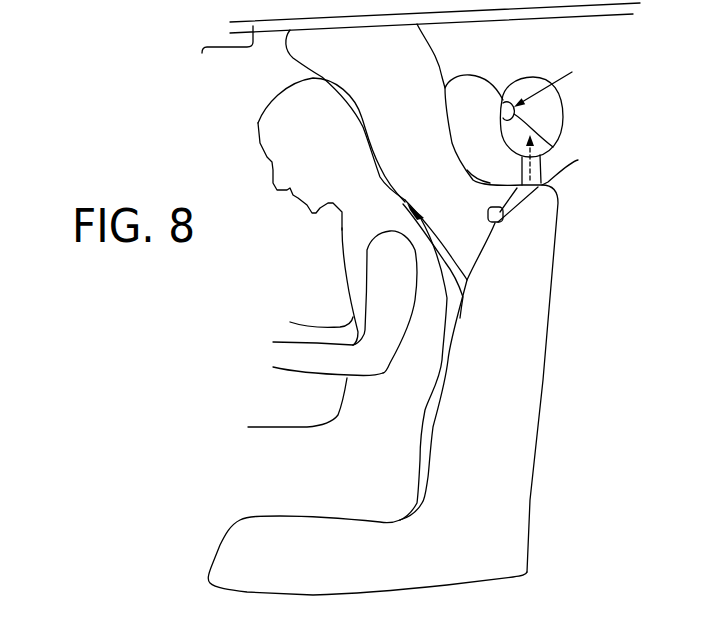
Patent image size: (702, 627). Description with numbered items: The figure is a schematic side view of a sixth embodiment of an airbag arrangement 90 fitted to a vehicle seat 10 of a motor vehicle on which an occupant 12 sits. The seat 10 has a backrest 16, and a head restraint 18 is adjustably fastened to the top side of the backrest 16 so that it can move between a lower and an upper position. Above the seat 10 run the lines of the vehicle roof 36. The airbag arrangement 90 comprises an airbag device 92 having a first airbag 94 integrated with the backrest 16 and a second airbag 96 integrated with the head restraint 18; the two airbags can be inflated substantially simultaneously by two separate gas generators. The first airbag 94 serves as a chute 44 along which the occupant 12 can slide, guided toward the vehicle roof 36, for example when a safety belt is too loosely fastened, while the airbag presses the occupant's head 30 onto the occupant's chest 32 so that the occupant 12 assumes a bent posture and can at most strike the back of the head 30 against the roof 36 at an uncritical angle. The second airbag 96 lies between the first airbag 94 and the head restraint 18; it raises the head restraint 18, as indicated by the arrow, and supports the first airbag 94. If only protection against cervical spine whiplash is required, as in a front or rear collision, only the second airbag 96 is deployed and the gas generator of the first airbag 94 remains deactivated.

The vehicle seat 10 is at (422, 390).
The occupant 12 is at (331, 299).
The backrest 16 is at (527, 303).
The head restraint 18 is at (552, 108).
The occupant's head 30 is at (275, 128).
The occupant's chest 32 is at (357, 280).
The vehicle roof 36 is at (592, 8).
The chute 44 is at (300, 67).
The airbag arrangement 90 is at (555, 84).
The airbag device 92 is at (553, 152).
The first airbag 94 is at (420, 68).
The second airbag 96 is at (473, 97).